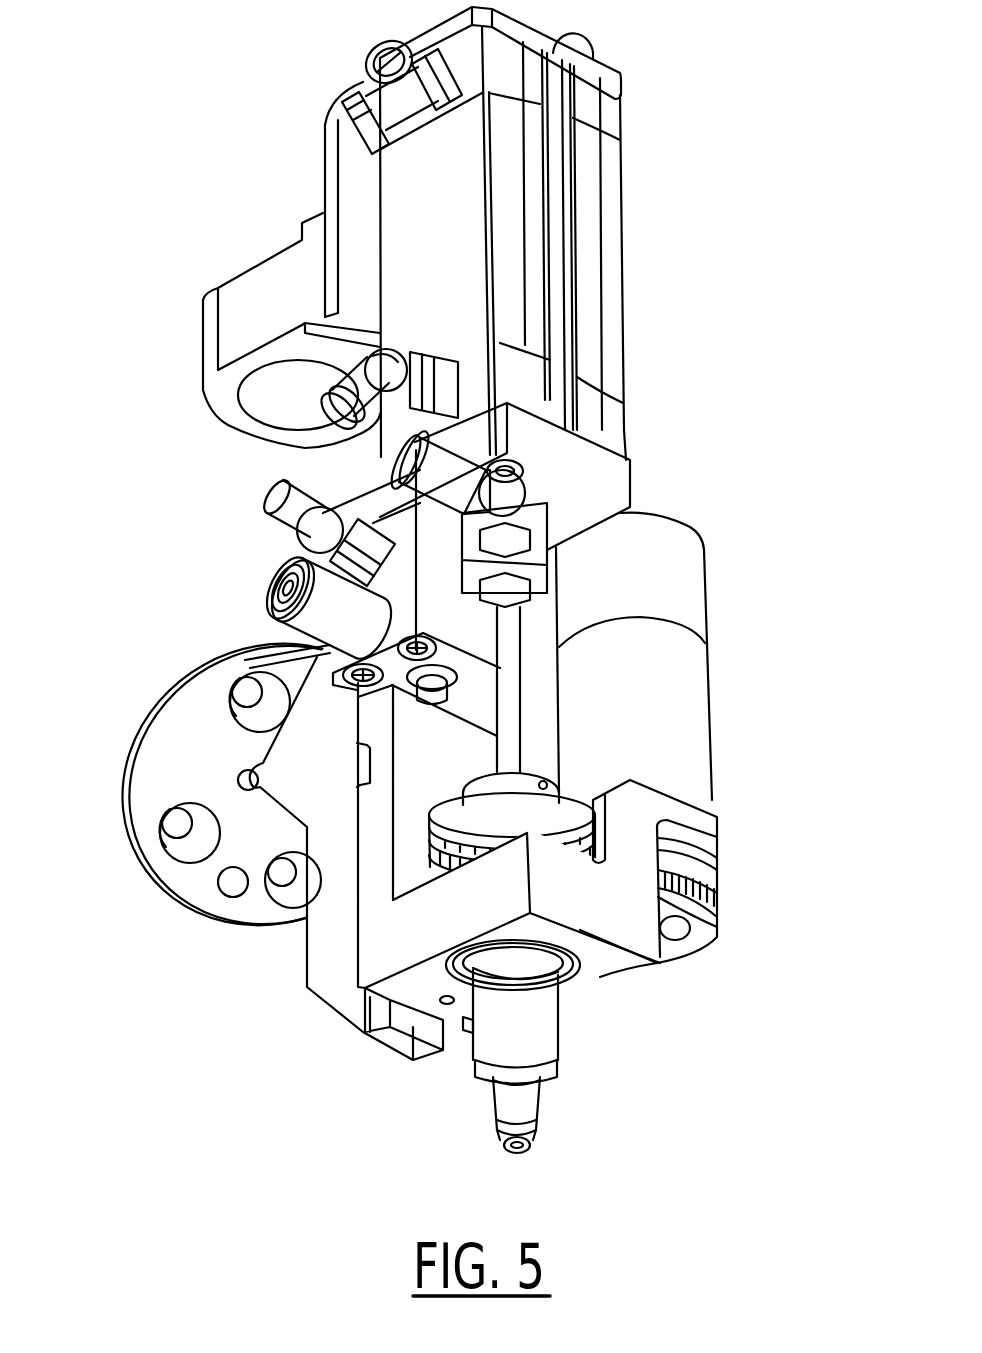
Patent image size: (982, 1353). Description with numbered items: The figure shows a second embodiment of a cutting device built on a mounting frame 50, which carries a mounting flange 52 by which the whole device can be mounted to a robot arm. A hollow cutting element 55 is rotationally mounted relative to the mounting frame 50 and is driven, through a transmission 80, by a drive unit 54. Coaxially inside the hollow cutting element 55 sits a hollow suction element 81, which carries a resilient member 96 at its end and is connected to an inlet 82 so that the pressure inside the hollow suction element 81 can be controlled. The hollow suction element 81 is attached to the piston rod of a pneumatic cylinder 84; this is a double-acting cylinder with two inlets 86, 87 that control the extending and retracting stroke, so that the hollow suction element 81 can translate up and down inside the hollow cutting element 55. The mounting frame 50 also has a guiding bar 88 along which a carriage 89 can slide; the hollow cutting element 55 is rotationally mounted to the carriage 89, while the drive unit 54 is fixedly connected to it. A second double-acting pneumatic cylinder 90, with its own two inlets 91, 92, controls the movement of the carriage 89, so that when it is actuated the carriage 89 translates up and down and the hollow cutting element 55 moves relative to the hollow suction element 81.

The mounting frame 50 is at (318, 930).
The mounting flange 52 is at (177, 787).
The drive unit 54 is at (687, 720).
The hollow cutting element 55 is at (527, 1108).
The transmission 80 is at (680, 868).
The hollow suction element 81 is at (510, 700).
The inlet 82 is at (470, 477).
The pneumatic cylinder 84 is at (587, 210).
The inlet 86 is at (363, 83).
The inlet 87 is at (395, 365).
The guiding bar 88 is at (417, 1027).
The carriage 89 is at (617, 915).
The second double-acting pneumatic cylinder 90 is at (353, 653).
The inlet 91 is at (293, 510).
The inlet 92 is at (267, 580).
The resilient member 96 is at (500, 1142).